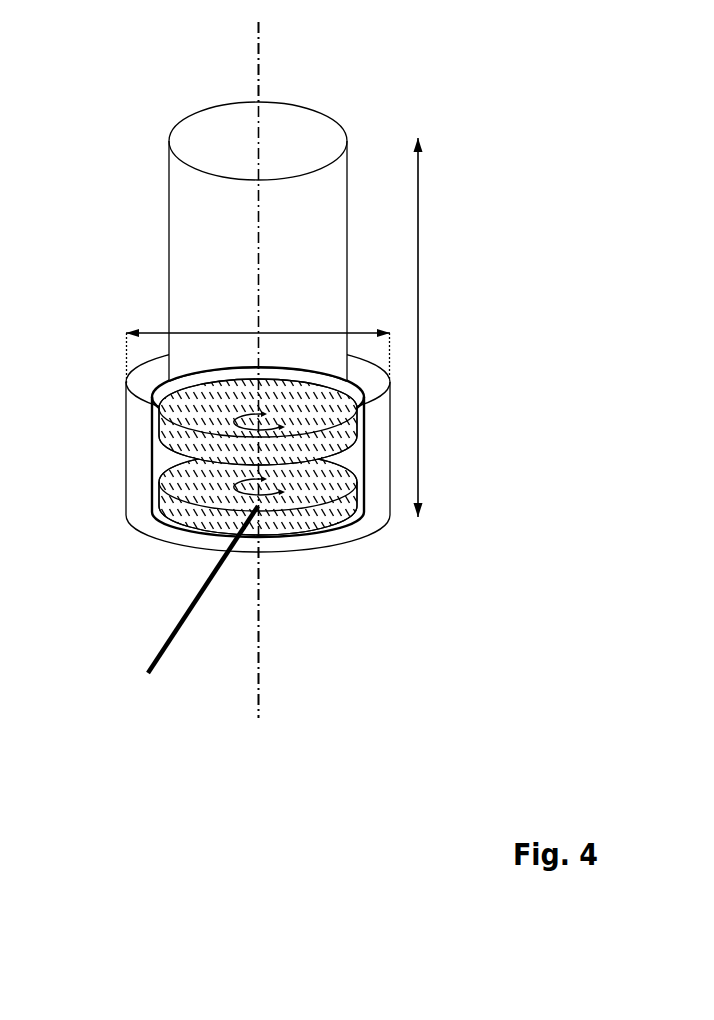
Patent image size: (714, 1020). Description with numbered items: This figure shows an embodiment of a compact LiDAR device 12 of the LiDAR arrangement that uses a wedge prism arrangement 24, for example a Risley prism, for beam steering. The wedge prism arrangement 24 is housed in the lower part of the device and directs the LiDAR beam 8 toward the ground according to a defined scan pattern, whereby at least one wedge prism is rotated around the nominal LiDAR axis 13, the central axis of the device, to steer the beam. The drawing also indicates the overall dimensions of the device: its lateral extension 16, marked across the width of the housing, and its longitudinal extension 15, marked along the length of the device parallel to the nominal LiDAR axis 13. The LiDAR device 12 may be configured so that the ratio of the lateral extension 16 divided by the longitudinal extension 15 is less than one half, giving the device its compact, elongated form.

The compact LiDAR device 12 is at (221, 298).
The lateral extension 16 is at (189, 241).
The wedge prism arrangement 24 is at (194, 454).
The longitudinal extension 15 is at (436, 327).
The LiDAR beam 8 is at (138, 589).
The nominal LiDAR axis 13 is at (333, 389).